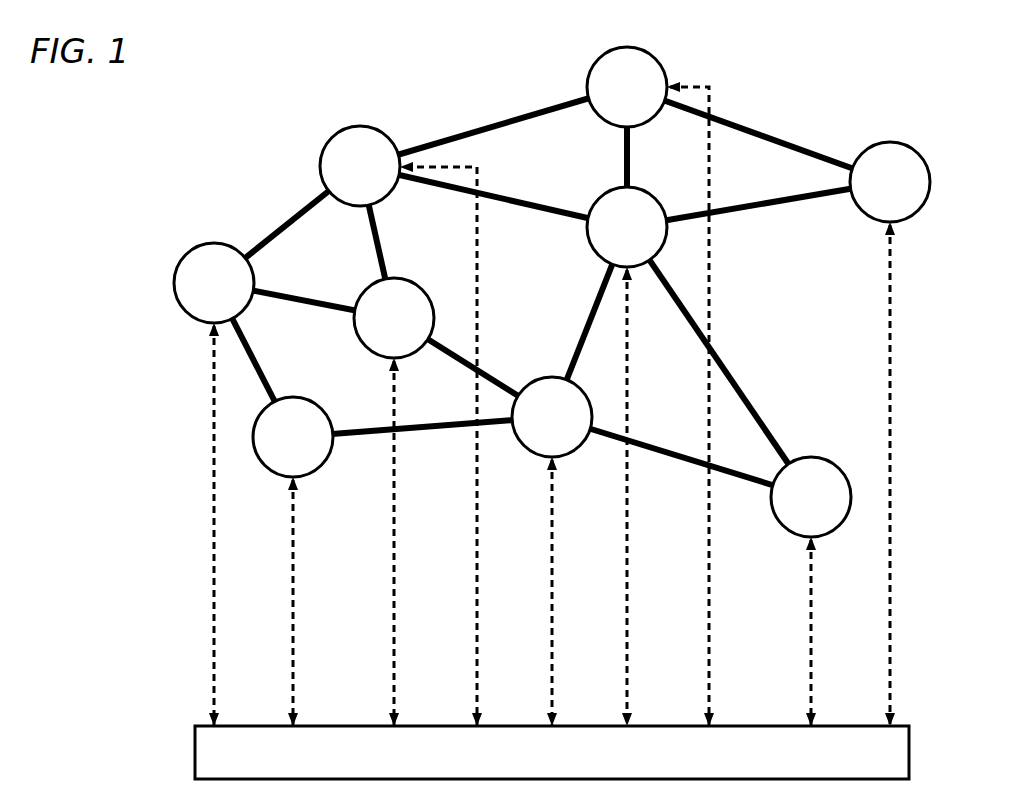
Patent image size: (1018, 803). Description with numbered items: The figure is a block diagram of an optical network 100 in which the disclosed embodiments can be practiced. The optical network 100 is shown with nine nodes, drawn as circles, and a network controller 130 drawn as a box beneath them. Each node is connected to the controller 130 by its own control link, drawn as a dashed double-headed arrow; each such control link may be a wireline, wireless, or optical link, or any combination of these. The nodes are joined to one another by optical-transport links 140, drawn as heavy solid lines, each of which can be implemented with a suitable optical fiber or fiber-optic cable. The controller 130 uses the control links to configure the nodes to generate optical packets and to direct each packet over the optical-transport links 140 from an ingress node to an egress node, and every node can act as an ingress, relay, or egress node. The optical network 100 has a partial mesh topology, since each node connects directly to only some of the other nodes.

The optical network 100 is at (117, 113).
The network controller 130 is at (910, 752).
The optical-transport link 140 is at (510, 118).